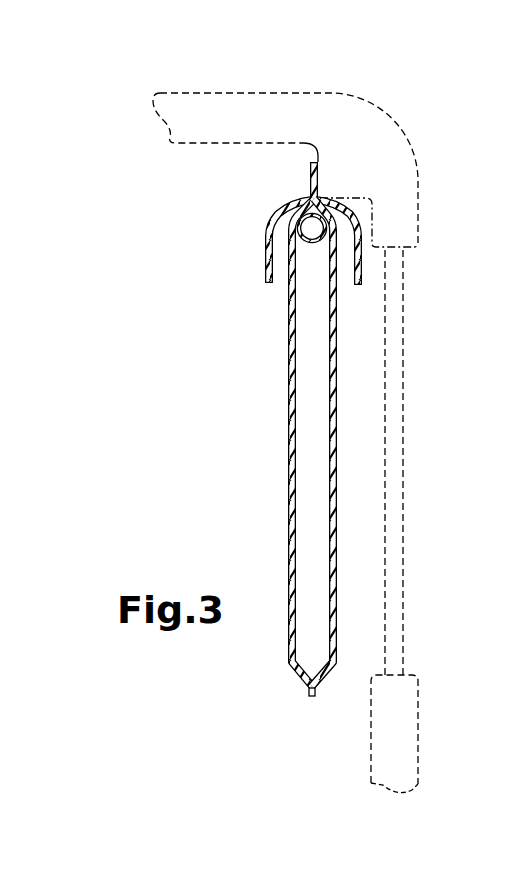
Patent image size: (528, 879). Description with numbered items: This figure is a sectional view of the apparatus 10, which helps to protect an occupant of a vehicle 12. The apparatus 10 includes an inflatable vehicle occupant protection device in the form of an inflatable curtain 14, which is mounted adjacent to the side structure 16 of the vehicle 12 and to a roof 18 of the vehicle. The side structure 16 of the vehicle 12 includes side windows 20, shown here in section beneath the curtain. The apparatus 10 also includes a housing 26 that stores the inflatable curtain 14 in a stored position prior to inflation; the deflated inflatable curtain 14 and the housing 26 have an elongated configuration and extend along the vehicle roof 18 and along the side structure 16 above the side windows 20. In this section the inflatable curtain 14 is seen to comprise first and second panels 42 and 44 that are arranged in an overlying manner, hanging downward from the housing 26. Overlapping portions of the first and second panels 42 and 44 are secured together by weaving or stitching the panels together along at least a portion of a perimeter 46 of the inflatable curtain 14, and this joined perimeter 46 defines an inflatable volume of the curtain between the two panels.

The apparatus 10 is at (255, 449).
The vehicle 12 is at (327, 416).
The inflatable curtain 14 is at (293, 468).
The side structure 16 is at (397, 218).
The roof 18 is at (225, 118).
The side windows 20 is at (396, 512).
The housing 26 is at (297, 226).
The first panel 42 is at (333, 363).
The second panel 44 is at (290, 327).
The perimeter 46 is at (310, 694).